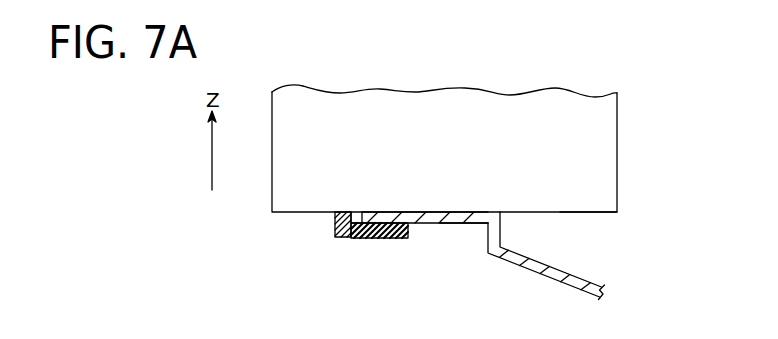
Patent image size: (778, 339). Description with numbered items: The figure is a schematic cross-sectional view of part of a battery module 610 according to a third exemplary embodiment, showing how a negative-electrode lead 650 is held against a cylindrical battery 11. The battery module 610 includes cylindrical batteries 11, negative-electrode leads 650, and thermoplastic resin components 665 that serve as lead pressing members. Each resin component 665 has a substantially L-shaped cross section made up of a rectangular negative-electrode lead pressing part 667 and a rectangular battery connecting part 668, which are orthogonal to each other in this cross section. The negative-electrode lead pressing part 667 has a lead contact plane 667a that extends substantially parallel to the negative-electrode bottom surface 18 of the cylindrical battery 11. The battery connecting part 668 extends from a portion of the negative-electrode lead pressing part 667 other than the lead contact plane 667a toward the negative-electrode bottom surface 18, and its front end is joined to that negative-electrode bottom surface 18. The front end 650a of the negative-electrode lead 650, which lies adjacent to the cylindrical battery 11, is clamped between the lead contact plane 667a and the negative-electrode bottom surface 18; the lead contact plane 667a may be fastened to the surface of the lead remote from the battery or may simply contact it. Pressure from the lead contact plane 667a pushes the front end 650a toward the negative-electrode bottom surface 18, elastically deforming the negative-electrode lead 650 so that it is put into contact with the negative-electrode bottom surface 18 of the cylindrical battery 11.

The cylindrical battery 11 is at (586, 93).
The battery module 610 is at (484, 86).
The negative-electrode bottom surface 18 is at (593, 213).
The lead contact plane 667a is at (388, 210).
The negative-electrode lead pressing part 667 is at (405, 238).
The battery connecting part 668 is at (335, 224).
The thermoplastic resin component 665 is at (364, 238).
The negative-electrode lead 650 is at (511, 264).
The front end of negative-electrode lead 650a is at (450, 224).